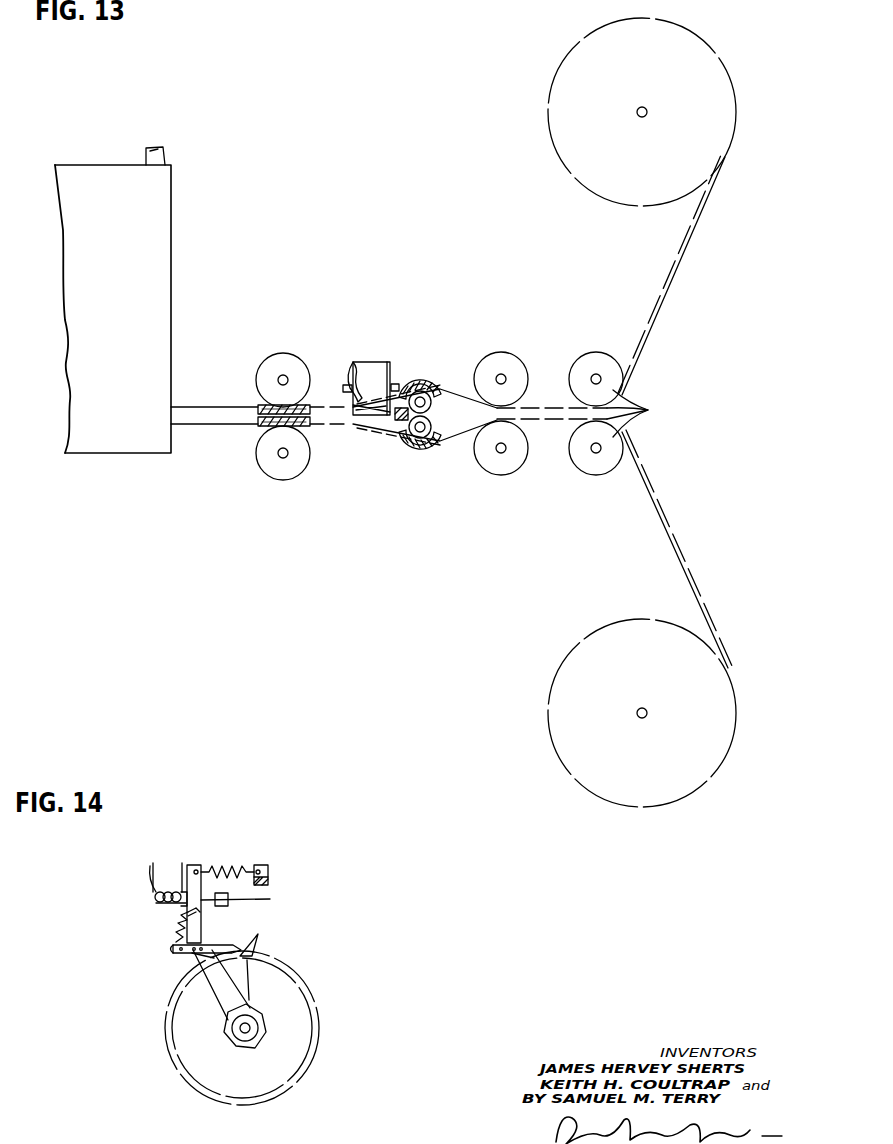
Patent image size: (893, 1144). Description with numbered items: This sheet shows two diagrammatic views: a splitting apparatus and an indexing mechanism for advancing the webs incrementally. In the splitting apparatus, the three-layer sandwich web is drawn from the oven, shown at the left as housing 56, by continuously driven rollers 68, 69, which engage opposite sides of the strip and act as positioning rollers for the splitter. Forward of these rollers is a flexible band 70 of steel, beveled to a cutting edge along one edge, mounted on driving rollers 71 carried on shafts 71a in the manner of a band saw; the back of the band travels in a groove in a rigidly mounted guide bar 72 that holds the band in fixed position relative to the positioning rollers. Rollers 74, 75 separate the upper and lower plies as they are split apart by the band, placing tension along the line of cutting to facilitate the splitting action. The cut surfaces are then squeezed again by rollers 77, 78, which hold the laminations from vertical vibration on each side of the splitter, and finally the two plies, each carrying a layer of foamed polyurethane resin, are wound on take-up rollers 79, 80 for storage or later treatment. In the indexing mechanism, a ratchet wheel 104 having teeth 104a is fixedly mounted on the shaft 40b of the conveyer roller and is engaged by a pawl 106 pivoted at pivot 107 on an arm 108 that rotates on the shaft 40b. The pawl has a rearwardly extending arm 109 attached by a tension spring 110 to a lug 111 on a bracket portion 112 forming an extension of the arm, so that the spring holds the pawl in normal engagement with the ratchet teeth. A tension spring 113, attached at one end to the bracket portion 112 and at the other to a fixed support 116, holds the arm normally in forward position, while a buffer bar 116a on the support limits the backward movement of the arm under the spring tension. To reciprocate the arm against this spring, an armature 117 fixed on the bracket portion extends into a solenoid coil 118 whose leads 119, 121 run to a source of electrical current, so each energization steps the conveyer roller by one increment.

In FIG. 13, the housing 56 is at (171, 300).
In FIG. 13, the positioning roller 68 is at (283, 353).
In FIG. 13, the positioning roller 69 is at (283, 480).
In FIG. 13, the flexible band 70 is at (380, 362).
In FIG. 13, the driving roller 71 is at (350, 363).
In FIG. 13, the shaft 71a is at (344, 386).
In FIG. 13, the guide bar 72 is at (393, 415).
In FIG. 13, the roller 74 is at (430, 394).
In FIG. 13, the roller 75 is at (436, 430).
In FIG. 13, the roller 77 is at (501, 352).
In FIG. 13, the roller 78 is at (648, 410).
In FIG. 13, the take-up roller 79 is at (590, 190).
In FIG. 13, the take-up roller 80 is at (548, 713).
In FIG. 14, the ratchet wheel 104 is at (247, 967).
In FIG. 14, the teeth 104a is at (262, 926).
In FIG. 14, the pawl 106 is at (207, 937).
In FIG. 14, the pivot 107 is at (195, 960).
In FIG. 14, the arm 108 is at (220, 1000).
In FIG. 14, the rearwardly extending arm 109 is at (176, 952).
In FIG. 14, the tension spring 110 is at (176, 929).
In FIG. 14, the lug 111 is at (200, 913).
In FIG. 14, the bracket portion 112 is at (196, 864).
In FIG. 14, the tension spring 113 is at (230, 862).
In FIG. 14, the fixed support 116 is at (268, 878).
In FIG. 14, the buffer bar 116a is at (262, 865).
In FIG. 14, the armature 117 is at (183, 907).
In FIG. 14, the solenoid coil 118 is at (165, 885).
In FIG. 14, the lead 119 is at (155, 875).
In FIG. 14, the lead 121 is at (180, 878).
In FIG. 14, the shaft 40b is at (250, 1028).